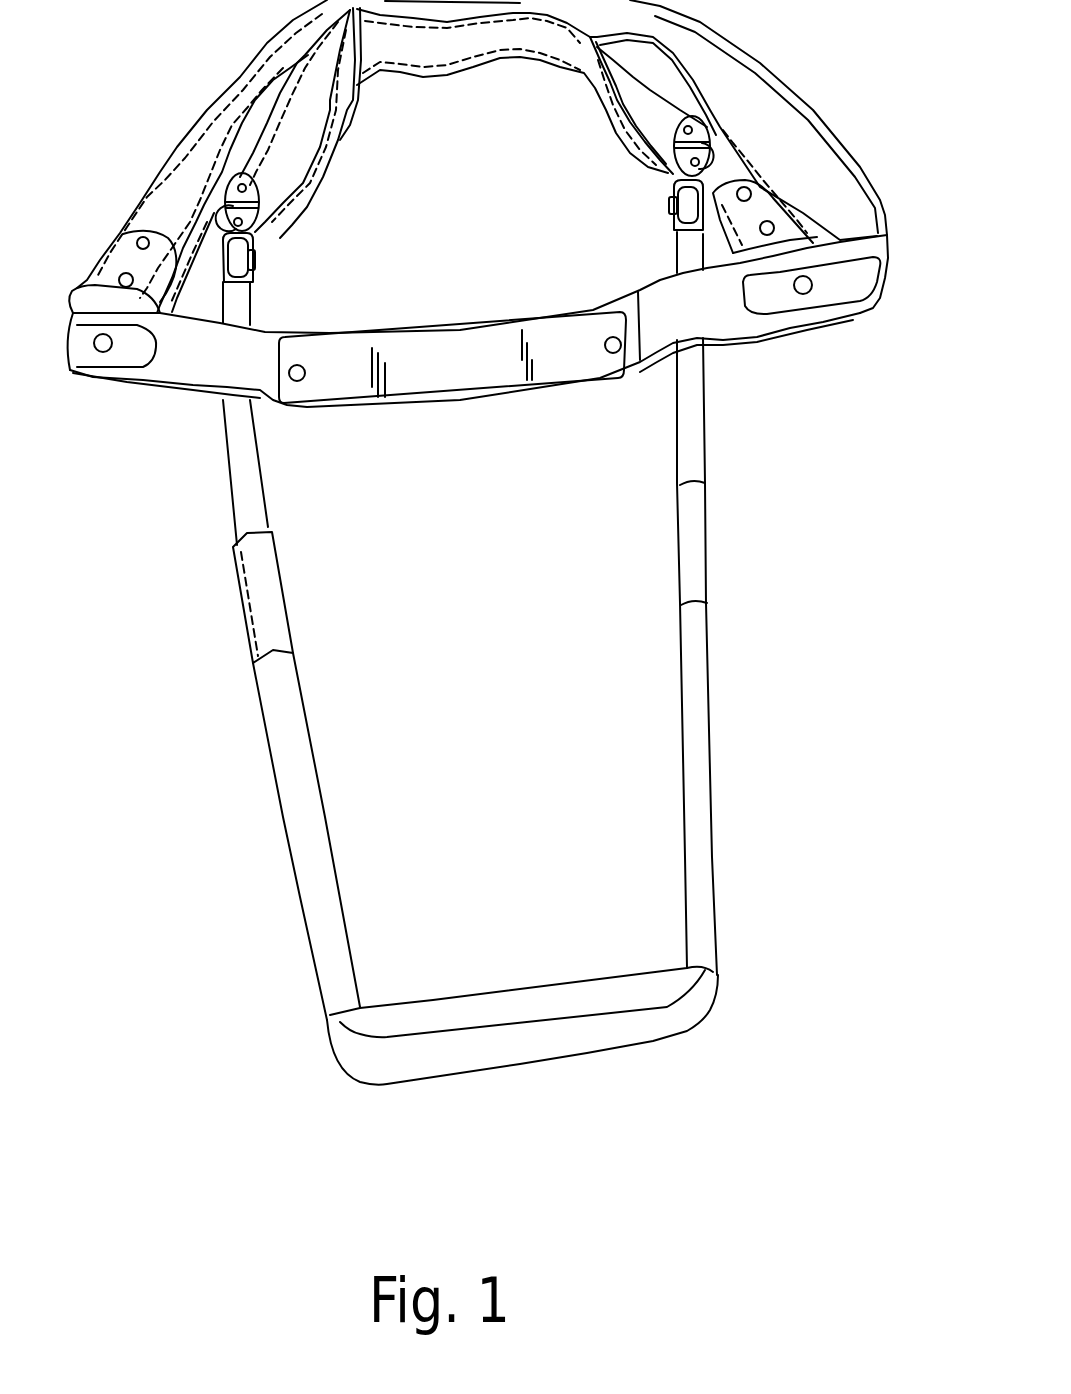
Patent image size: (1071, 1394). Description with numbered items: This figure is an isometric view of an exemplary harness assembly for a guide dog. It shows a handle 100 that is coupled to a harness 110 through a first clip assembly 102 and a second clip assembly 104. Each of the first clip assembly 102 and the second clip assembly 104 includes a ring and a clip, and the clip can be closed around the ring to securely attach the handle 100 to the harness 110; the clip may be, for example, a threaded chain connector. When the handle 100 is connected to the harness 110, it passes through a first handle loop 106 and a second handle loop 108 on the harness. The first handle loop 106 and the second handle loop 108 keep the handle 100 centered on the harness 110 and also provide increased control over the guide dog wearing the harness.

The handle 100 is at (712, 812).
The first clip assembly 102 is at (631, 195).
The second clip assembly 104 is at (252, 220).
The first handle loop 106 is at (733, 350).
The second handle loop 108 is at (193, 393).
The harness 110 is at (446, 387).